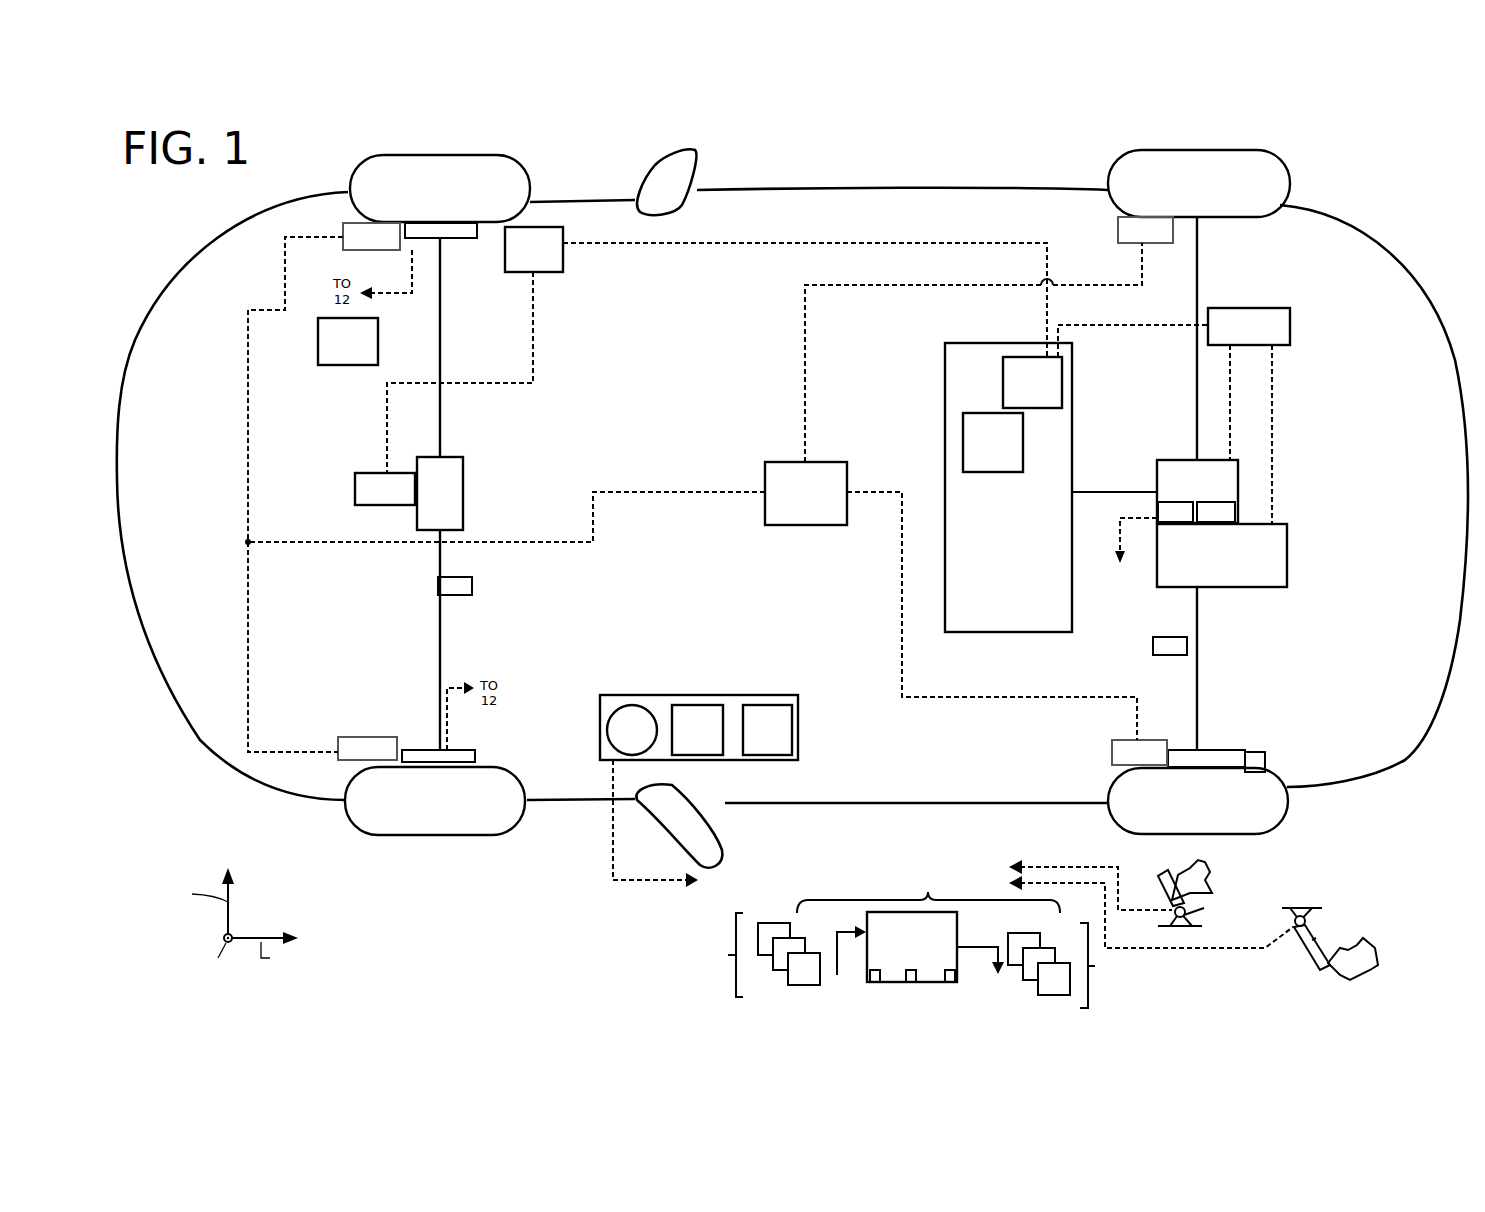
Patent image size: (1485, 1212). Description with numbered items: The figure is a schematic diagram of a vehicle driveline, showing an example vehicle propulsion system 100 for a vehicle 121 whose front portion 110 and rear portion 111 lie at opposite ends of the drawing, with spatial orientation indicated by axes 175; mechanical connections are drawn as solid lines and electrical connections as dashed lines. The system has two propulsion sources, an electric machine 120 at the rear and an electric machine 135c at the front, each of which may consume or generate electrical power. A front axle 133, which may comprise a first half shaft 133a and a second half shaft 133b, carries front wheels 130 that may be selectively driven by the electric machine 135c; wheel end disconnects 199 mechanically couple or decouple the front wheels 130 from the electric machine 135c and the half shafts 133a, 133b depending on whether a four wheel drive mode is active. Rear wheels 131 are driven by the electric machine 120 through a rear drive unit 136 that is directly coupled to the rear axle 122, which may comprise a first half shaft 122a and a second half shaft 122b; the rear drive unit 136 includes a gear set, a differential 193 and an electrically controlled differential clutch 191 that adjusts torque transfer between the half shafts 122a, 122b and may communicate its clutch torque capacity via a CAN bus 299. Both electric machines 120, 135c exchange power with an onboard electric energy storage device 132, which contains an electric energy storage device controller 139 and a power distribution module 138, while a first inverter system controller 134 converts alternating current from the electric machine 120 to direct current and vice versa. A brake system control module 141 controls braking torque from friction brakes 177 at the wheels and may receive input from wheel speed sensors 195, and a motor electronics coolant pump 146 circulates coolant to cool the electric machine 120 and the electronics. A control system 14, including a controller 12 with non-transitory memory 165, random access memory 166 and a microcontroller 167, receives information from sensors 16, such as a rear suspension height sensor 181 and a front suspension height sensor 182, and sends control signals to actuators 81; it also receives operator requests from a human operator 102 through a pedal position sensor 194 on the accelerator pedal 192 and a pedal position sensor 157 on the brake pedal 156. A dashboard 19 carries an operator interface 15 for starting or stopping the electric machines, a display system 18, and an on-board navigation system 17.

The vehicle propulsion system 100 is at (938, 163).
The front portion of vehicle 110 is at (137, 292).
The rear portion of vehicle 111 is at (1427, 230).
The vehicle 121 is at (1413, 799).
The front wheels 130 is at (455, 155).
The rear wheels 131 is at (1235, 150).
The front axle 133 is at (424, 569).
The first half shaft 133a is at (440, 325).
The second half shaft 133b is at (440, 660).
The wheel end disconnects 199 is at (453, 238).
The rear axle 122 is at (1231, 290).
The first half shaft 122a is at (1197, 270).
The second half shaft 122b is at (1197, 695).
The friction brakes 177 is at (755, 491).
The motor electronics coolant pump 146 is at (348, 341).
The electric machine 135c is at (385, 489).
The front suspension height sensor 182 is at (472, 587).
The brake system control module 141 is at (806, 493).
The electric energy storage device 132 is at (1051, 487).
The power distribution module 138 is at (1032, 382).
The electric energy storage device controller 139 is at (993, 442).
The first inverter system controller 134 is at (1249, 326).
The rear drive unit 136 is at (1197, 491).
The electrically controlled differential clutch 191 is at (1175, 512).
The differential 193 is at (1216, 512).
The CAN bus 299 is at (1131, 561).
The electric machine 120 is at (1222, 555).
The rear suspension height sensor 181 is at (1172, 647).
The wheel speed sensor 195 is at (1257, 752).
The dashboard 19 is at (727, 695).
The operator interface 15 is at (632, 730).
The display system 18 is at (697, 730).
The on-board navigation system 17 is at (767, 730).
The axes 175 is at (257, 884).
The control system 14 is at (928, 880).
The controller 12 is at (912, 947).
The sensors 16 is at (758, 955).
The actuators 81 is at (1069, 965).
The non-transitory memory 165 is at (875, 978).
The random access memory 166 is at (910, 978).
The microcontroller 167 is at (950, 978).
The pedal 192 is at (1163, 895).
The pedal position sensor 194 is at (1204, 908).
The human operator 102 is at (1194, 878).
The pedal position sensor 157 is at (1292, 922).
The brake pedal 156 is at (1325, 968).